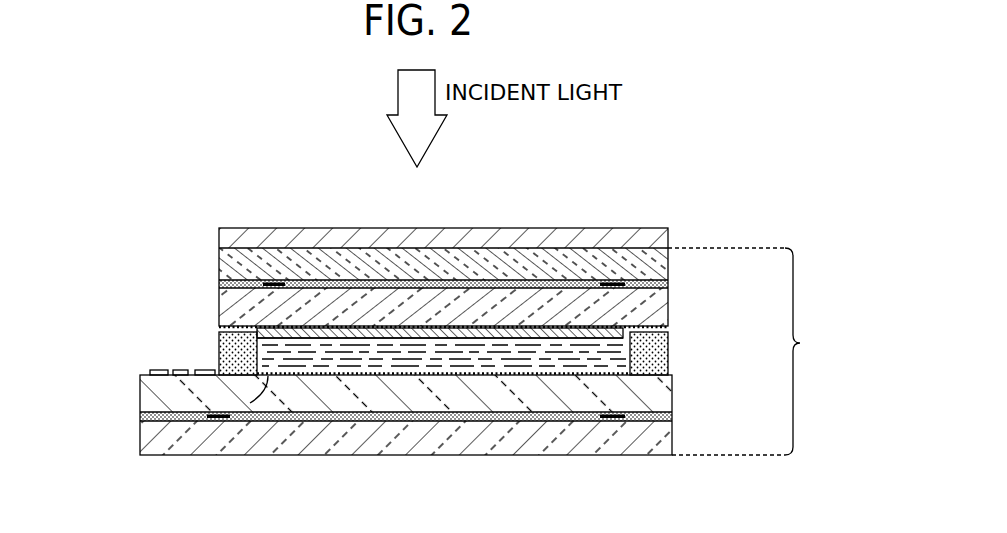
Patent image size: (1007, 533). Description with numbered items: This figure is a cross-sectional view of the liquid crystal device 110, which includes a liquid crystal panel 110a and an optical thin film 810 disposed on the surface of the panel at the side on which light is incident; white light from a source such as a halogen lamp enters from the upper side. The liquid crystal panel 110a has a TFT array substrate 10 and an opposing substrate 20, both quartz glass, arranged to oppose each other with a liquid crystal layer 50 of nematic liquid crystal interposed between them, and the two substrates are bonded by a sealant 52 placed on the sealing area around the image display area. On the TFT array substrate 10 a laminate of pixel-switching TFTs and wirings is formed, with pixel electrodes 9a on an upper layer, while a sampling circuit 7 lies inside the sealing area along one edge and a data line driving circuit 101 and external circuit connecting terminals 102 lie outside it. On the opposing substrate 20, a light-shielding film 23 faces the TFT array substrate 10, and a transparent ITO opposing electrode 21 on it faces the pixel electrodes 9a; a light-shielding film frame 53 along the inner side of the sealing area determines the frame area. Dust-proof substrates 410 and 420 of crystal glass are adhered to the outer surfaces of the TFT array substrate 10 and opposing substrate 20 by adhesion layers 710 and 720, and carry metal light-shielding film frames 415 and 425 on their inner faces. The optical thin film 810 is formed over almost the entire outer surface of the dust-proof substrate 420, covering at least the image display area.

The liquid crystal device 110 is at (232, 135).
The liquid crystal panel 110a is at (758, 351).
The optical thin film 810 is at (454, 240).
The dust-proof substrate 420 is at (573, 264).
The adhesion layer 720 is at (667, 287).
The light-shielding film frame 425 is at (272, 284).
The opposing substrate 20 is at (327, 308).
The light-shielding film 23 is at (372, 326).
The light-shielding film frame 53 is at (265, 328).
The opposing electrode 21 is at (522, 327).
The sealant 52 is at (222, 333).
The liquid crystal layer 50 is at (397, 356).
The pixel electrodes 9a is at (345, 376).
The TFT array substrate 10 is at (485, 396).
The adhesion layer 710 is at (667, 416).
The light-shielding film frame 415 is at (263, 416).
The dust-proof substrate 410 is at (550, 443).
The sampling circuit 7 is at (250, 403).
The data line driving circuit 101 is at (197, 370).
The external circuit connecting terminals 102 is at (153, 372).